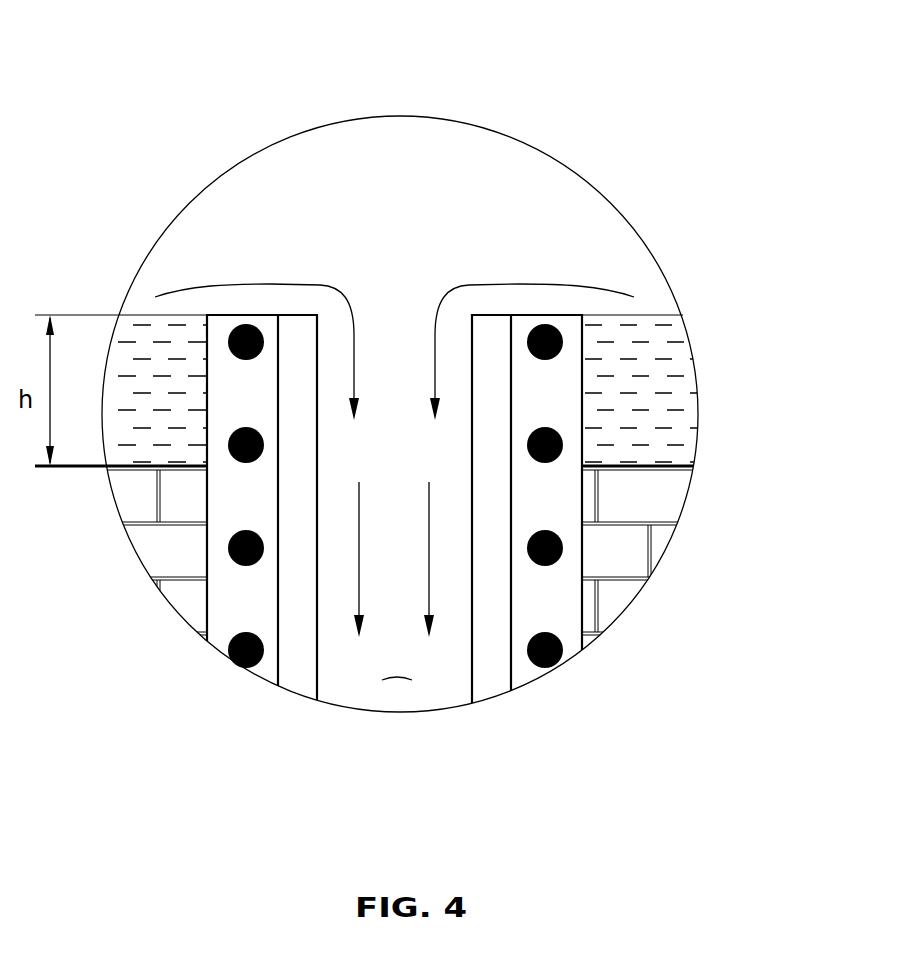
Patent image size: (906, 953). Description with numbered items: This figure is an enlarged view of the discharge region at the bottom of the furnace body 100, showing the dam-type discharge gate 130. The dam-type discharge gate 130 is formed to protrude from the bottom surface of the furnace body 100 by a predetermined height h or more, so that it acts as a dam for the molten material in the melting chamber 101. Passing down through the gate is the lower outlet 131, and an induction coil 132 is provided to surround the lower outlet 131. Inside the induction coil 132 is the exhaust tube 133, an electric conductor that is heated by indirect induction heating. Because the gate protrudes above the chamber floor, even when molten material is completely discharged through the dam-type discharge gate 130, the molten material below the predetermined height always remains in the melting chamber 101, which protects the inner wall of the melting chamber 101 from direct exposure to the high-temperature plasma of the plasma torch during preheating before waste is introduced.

The furnace body 100 is at (675, 501).
The melting chamber 101 is at (342, 215).
The dam-type discharge gate 130 is at (398, 200).
The lower outlet 131 is at (398, 679).
The induction coil 132 is at (243, 668).
The exhaust tube 133 is at (300, 685).